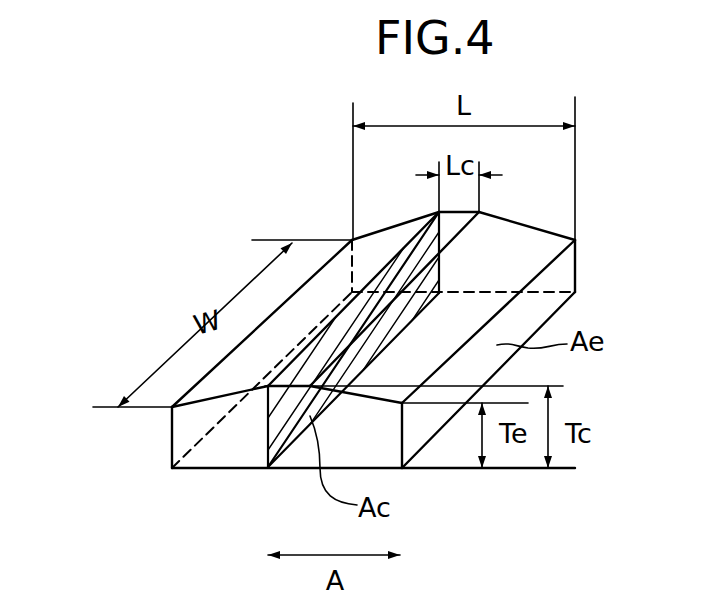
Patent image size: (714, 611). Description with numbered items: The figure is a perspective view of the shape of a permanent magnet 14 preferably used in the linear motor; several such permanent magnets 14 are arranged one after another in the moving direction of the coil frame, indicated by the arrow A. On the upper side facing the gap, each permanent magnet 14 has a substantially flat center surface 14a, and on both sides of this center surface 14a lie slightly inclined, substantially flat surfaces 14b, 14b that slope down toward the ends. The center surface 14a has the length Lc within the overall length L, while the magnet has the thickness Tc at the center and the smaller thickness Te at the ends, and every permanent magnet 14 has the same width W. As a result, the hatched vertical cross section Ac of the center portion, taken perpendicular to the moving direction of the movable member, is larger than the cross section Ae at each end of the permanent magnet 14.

The permanent magnet 14 is at (222, 443).
The center surface 14a is at (360, 308).
The inclined surface 14b is at (217, 376).